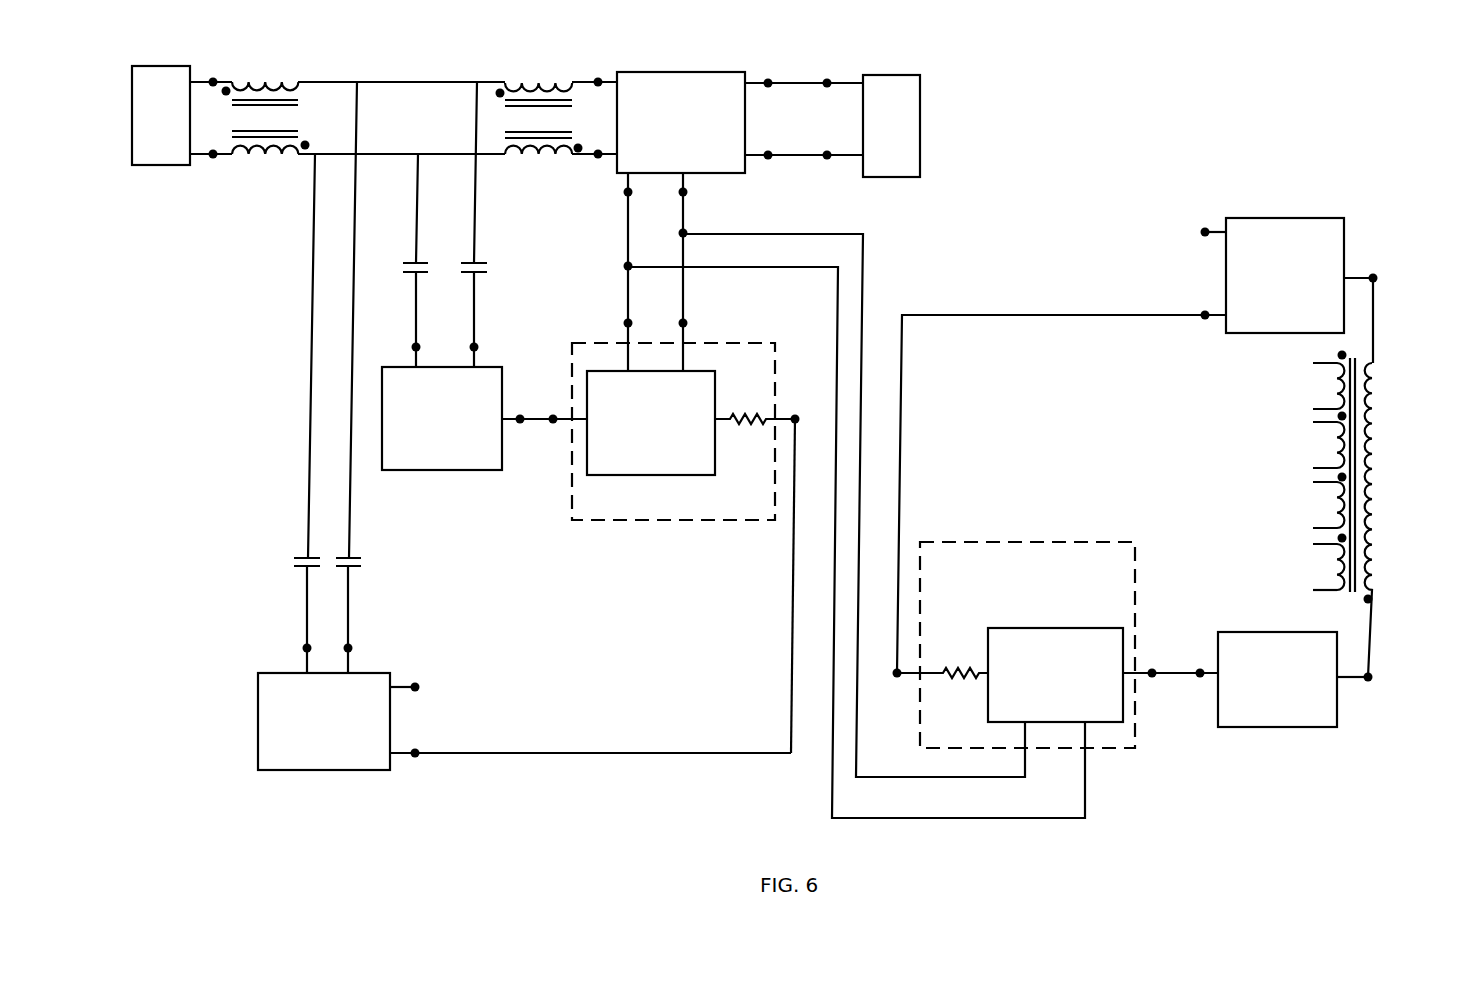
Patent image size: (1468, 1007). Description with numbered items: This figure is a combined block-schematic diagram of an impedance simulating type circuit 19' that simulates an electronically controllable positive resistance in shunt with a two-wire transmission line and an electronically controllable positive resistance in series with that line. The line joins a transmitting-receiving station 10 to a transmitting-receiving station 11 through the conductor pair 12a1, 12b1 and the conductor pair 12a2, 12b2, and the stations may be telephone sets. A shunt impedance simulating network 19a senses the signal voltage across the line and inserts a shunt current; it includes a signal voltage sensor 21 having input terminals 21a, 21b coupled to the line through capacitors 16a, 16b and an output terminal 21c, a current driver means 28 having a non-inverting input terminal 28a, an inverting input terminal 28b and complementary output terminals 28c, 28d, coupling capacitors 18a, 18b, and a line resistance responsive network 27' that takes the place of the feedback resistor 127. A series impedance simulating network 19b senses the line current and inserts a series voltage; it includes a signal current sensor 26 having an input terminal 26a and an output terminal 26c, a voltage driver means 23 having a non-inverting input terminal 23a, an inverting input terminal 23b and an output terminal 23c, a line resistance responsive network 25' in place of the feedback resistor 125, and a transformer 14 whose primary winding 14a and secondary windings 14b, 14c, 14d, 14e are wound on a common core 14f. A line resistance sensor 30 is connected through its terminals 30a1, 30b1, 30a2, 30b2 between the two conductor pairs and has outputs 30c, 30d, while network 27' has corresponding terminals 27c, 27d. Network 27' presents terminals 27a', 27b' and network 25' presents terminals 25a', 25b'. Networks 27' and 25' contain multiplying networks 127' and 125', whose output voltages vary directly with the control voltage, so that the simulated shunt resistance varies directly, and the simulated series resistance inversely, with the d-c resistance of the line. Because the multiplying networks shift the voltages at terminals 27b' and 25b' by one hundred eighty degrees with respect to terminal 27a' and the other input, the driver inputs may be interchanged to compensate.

The transmitting-receiving station 10 is at (161, 115).
The transmitting-receiving station 11 is at (891, 126).
The transmission line conductor 12a1 is at (213, 73).
The transmission line conductor 12b1 is at (210, 163).
The transmission line conductor 12a2 is at (845, 80).
The transmission line conductor 12b2 is at (831, 160).
The transformer 14 is at (283, 222).
The primary winding 14a is at (1375, 502).
The secondary winding 14b is at (272, 82).
The secondary winding 14c is at (536, 82).
The secondary winding 14d is at (263, 157).
The secondary winding 14e is at (531, 160).
The common core 14f is at (1338, 593).
The coupling capacitor 16a is at (486, 273).
The coupling capacitor 16b is at (409, 262).
The coupling capacitor 18a is at (358, 570).
The coupling capacitor 18b is at (297, 570).
The shunt impedance simulating network 19a is at (258, 378).
The series impedance simulating network 19b is at (1070, 294).
The impedance simulating type circuit 19' is at (708, 829).
The signal voltage sensor 21 is at (446, 472).
The input terminal 21a is at (480, 346).
The input terminal 21b is at (411, 345).
The output terminal 21c is at (521, 414).
The voltage driver means 23 is at (1278, 218).
The non-inverting input terminal 23a is at (1200, 311).
The inverting input terminal 23b is at (1200, 228).
The output terminal 23c is at (1375, 275).
The line resistance responsive network 25' is at (1027, 626).
The multiplying circuit output terminal 25a' is at (1170, 655).
The terminal 25b' is at (882, 691).
The signal current sensor 26 is at (1290, 728).
The input terminal 26a is at (1368, 685).
The output terminal 26c is at (1198, 683).
The line resistance responsive network 27' is at (673, 451).
The terminal 27a' is at (532, 438).
The terminal 27b' is at (814, 568).
The multiplying circuit control input 27c is at (624, 322).
The multiplying circuit control input 27d is at (689, 322).
The current driver means 28 is at (305, 775).
The non-inverting input terminal 28a is at (416, 759).
The inverting input terminal 28b is at (421, 685).
The complementary output terminal 28c is at (352, 648).
The complementary output terminal 28d is at (303, 648).
The line resistance sensor 30 is at (688, 72).
The line resistance sensor terminal 30a1 is at (600, 78).
The line resistance sensor terminal 30b1 is at (598, 160).
The line resistance sensor terminal 30a2 is at (768, 78).
The line resistance sensor terminal 30b2 is at (768, 150).
The line resistance sensor output 30c is at (689, 192).
The line resistance sensor output 30d is at (624, 196).
The resistor 125 is at (942, 655).
The multiplying network 125' is at (875, 526).
The resistor 127 is at (755, 401).
The multiplying network 127' is at (656, 441).